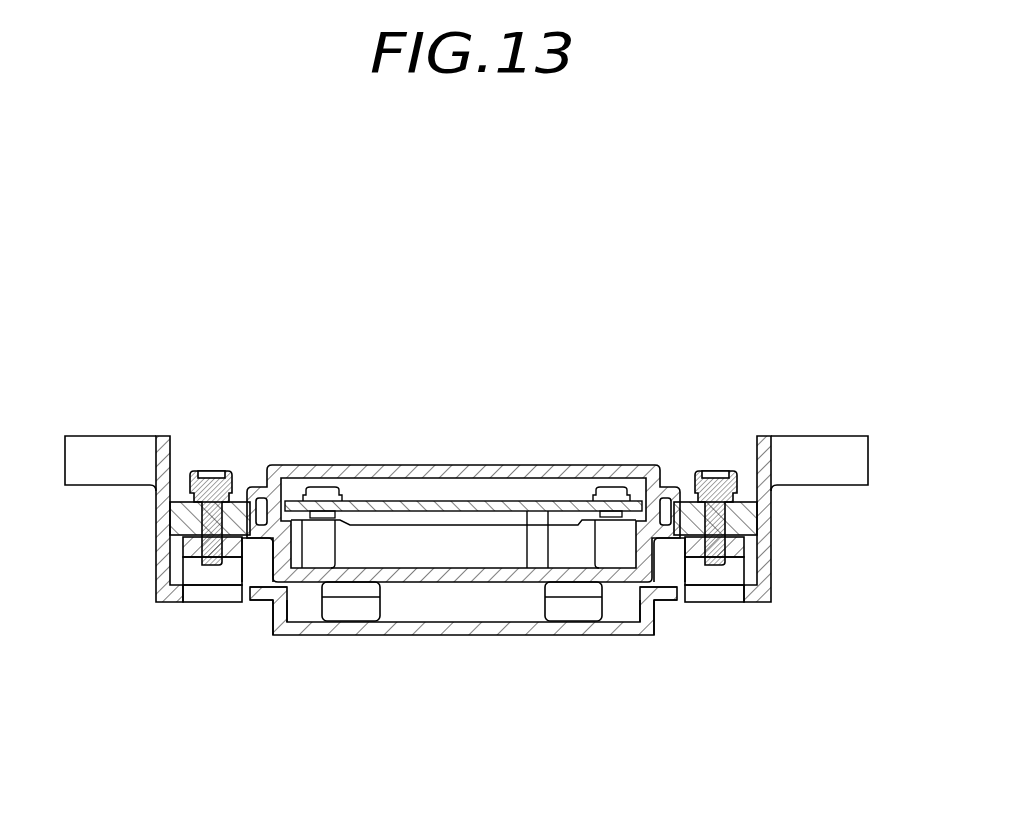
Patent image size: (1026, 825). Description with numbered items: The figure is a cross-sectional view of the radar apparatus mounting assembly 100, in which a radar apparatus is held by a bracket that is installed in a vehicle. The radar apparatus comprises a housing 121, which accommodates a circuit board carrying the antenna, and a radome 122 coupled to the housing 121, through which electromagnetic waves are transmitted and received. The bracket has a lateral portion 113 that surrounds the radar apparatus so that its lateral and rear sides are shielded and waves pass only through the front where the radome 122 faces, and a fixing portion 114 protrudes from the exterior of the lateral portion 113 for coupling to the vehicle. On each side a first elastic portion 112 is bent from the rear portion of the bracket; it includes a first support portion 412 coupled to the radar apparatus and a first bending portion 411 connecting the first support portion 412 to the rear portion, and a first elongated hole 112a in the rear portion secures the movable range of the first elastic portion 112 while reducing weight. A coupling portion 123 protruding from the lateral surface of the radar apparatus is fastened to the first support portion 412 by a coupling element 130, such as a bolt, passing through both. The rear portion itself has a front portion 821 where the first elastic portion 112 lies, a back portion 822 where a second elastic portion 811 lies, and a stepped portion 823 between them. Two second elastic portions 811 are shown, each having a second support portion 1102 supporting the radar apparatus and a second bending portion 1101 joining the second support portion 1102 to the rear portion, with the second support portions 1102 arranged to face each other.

The radar apparatus mounting assembly 100 is at (108, 322).
The first elastic portion 112 is at (77, 553).
The first elongated hole 112a is at (220, 595).
The lateral portion 113 is at (439, 450).
The fixing portion 114 is at (117, 447).
The housing 121 is at (393, 560).
The radome 122 is at (528, 468).
The coupling portion 123 is at (178, 515).
The coupling element 130 is at (210, 486).
The first bending portion 411 is at (190, 572).
The first support portion 412 is at (193, 548).
The second elastic portion 811 is at (464, 667).
The front portion 821 is at (262, 594).
The back portion 822 is at (470, 634).
The stepped portion 823 is at (305, 628).
The second bending portion 1101 is at (360, 612).
The second support portion 1102 is at (342, 605).